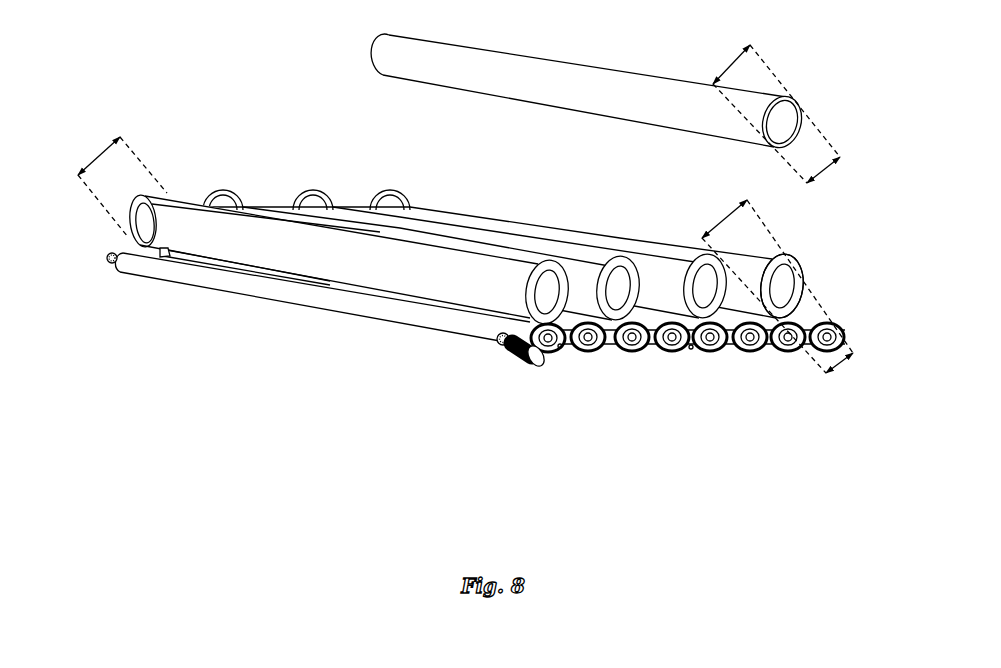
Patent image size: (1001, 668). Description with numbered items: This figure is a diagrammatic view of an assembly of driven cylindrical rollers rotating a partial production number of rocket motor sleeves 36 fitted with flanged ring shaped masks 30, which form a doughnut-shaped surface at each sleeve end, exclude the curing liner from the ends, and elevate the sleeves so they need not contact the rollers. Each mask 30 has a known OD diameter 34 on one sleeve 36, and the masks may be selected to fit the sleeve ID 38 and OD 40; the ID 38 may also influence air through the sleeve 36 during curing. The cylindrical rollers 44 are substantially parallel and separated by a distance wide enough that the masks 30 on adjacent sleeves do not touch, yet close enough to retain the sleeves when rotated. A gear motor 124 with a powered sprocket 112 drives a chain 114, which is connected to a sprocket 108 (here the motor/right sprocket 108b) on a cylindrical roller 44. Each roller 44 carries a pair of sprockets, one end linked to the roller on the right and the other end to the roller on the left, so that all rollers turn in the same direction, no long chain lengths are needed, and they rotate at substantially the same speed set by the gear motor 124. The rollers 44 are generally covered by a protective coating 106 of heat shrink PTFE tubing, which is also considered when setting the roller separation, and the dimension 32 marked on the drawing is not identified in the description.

The mask 30 is at (806, 278).
The roller pitch dimension 32 is at (838, 362).
The OD diameter 34 is at (103, 150).
The sleeve 36 is at (570, 100).
The sleeve ID 38 is at (823, 176).
The sleeve OD 40 is at (728, 60).
The cylindrical roller 44 is at (295, 303).
The protective coating 106 is at (845, 338).
The sprocket 108 is at (558, 345).
The sprocket (motor/right) 108b is at (610, 352).
The powered sprocket 112 is at (496, 341).
The chain 114 is at (108, 258).
The gear motor 124 is at (538, 365).